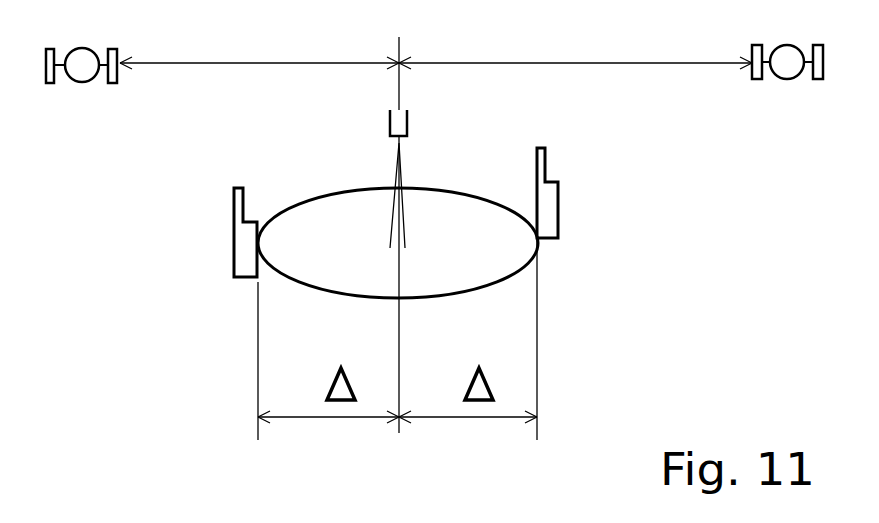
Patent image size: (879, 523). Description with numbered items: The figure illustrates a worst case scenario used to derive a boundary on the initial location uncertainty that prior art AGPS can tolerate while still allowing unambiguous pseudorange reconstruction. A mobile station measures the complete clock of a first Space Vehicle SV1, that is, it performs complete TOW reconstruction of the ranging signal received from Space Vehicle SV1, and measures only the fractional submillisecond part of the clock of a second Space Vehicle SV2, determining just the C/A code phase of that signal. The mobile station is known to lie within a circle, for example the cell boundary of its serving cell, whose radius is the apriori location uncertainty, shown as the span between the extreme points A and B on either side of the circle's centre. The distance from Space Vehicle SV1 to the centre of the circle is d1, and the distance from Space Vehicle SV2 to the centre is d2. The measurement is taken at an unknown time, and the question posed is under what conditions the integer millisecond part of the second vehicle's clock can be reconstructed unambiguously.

The first Space Vehicle SV1 is at (82, 48).
The second Space Vehicle SV2 is at (787, 45).
The distance from Space Vehicle SV1 to the centre of the circle d1 is at (259, 46).
The distance from Space Vehicle SV2 to the centre of the circle d2 is at (575, 45).
The left clamp / workpiece end point A is at (246, 314).
The right clamp / workpiece end point B is at (547, 294).